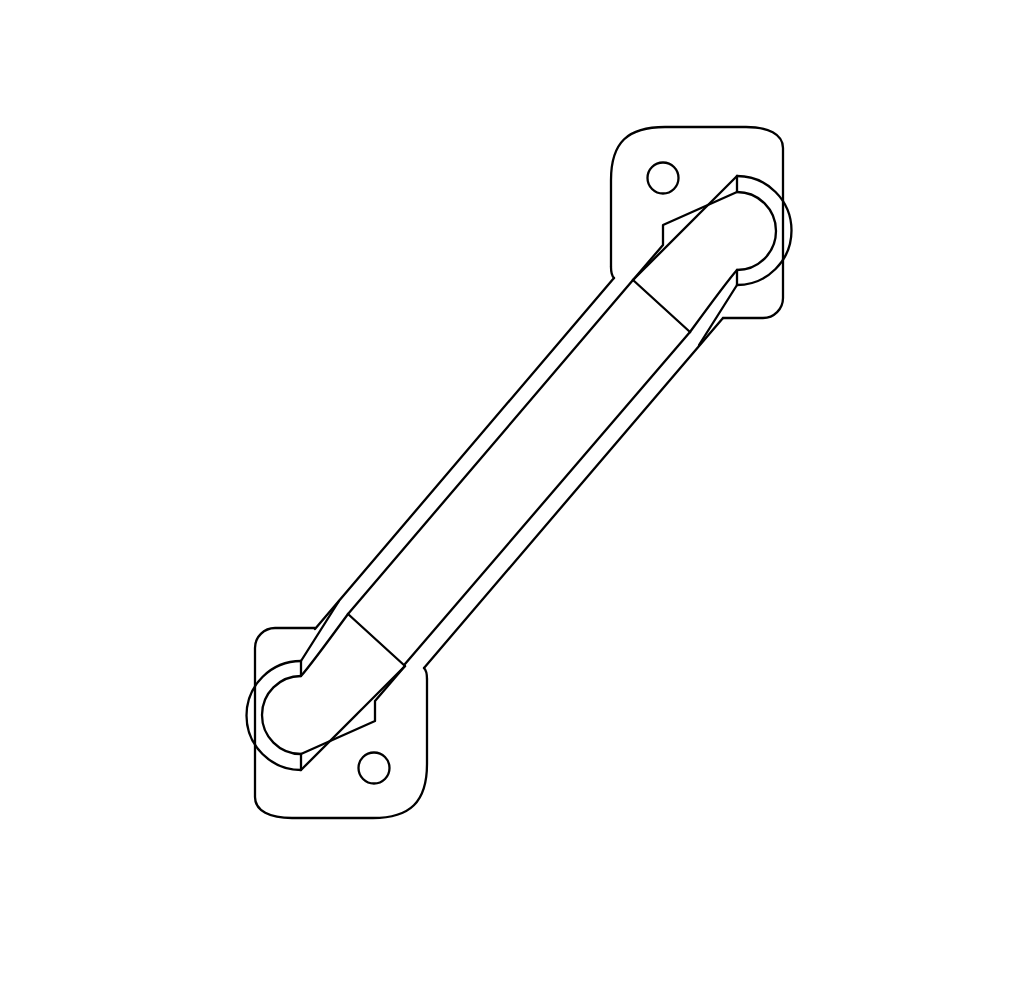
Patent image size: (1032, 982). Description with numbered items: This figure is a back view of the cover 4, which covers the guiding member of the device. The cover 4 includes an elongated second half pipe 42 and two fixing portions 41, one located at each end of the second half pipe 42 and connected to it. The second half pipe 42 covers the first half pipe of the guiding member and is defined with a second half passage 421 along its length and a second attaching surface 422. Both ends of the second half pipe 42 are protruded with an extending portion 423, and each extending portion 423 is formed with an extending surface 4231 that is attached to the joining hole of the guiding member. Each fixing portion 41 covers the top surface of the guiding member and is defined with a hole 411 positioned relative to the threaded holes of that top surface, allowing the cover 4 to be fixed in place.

The cover 4 is at (372, 350).
The fixing portion 41 is at (517, 474).
The hole 411 is at (661, 178).
The second half pipe 42 is at (527, 473).
The second half passage 421 is at (565, 423).
The second attaching surface 422 is at (477, 447).
The extending portion 423 is at (527, 473).
The extending surface 4231 is at (787, 235).